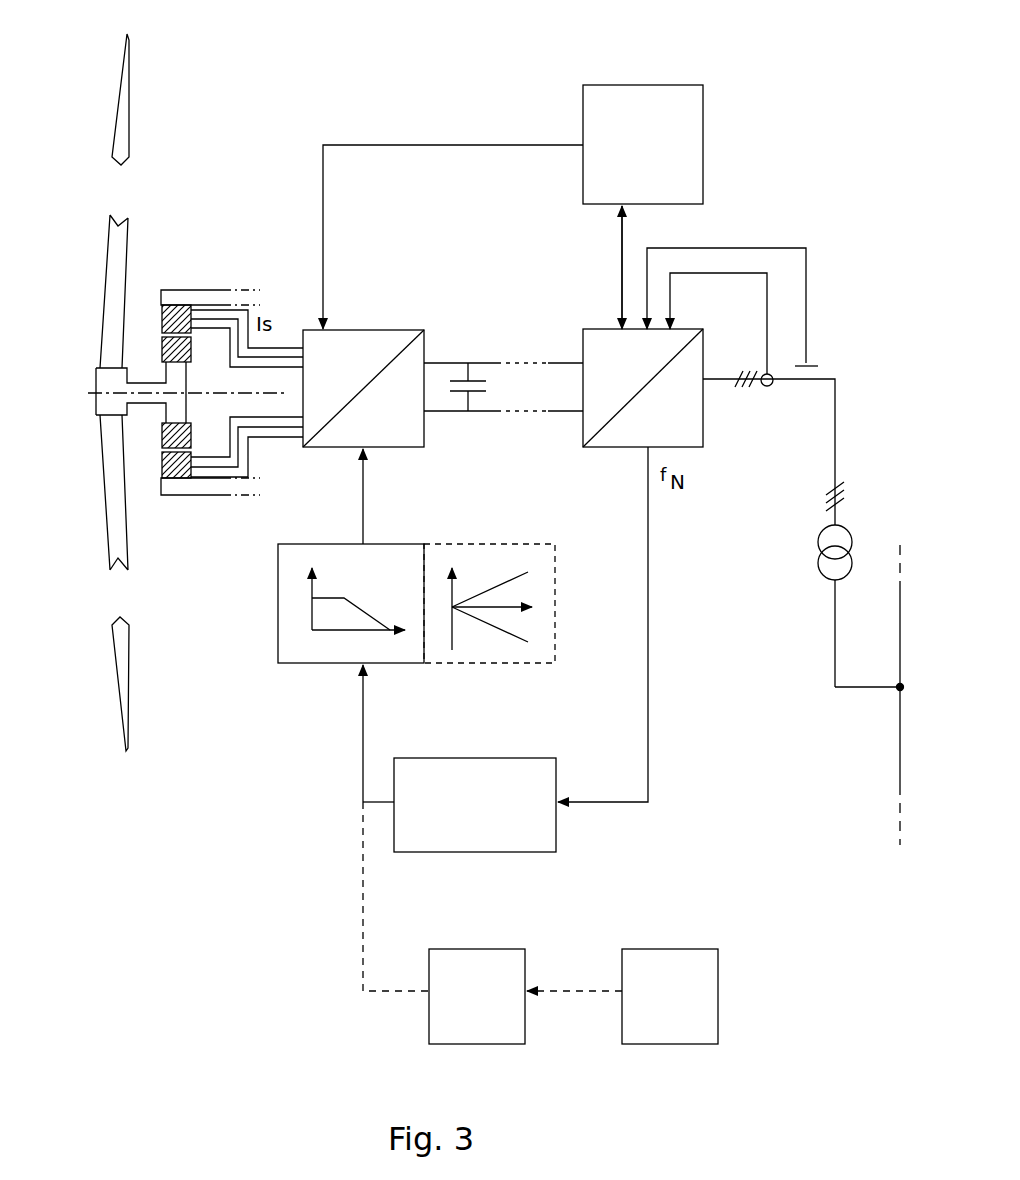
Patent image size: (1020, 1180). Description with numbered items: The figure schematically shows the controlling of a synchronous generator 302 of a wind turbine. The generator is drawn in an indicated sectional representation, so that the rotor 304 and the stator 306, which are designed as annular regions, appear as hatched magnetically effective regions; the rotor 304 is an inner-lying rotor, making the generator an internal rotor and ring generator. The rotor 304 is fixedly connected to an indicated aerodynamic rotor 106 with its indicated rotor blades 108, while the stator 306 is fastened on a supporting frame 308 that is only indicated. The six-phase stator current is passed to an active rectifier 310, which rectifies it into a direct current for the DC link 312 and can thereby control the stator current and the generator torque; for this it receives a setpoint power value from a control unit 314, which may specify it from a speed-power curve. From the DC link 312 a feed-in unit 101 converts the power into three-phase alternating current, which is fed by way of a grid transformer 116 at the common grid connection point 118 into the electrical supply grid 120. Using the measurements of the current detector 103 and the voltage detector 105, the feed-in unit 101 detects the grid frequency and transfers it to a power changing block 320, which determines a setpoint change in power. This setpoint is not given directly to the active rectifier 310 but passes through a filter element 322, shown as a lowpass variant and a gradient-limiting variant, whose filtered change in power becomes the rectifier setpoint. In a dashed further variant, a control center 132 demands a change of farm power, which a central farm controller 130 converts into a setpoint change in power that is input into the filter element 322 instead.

The feed-in unit 101 is at (596, 337).
The current detector 103 is at (752, 396).
The voltage detector 105 is at (823, 340).
The aerodynamic rotor 106 is at (99, 369).
The rotor blades 108 is at (115, 251).
The grid transformer 116 is at (838, 527).
The common grid connection point 118 is at (884, 702).
The electrical supply grid 120 is at (898, 686).
The central farm controller 130 is at (478, 948).
The control center 132 is at (653, 948).
The synchronous generator 302 is at (248, 192).
The rotor 304 is at (160, 357).
The stator 306 is at (157, 318).
The supporting frame 308 is at (195, 297).
The active rectifier 310 is at (385, 337).
The DC link 312 is at (469, 345).
The control unit 314 is at (703, 171).
The power changing block 320 is at (533, 756).
The filter element 322 is at (278, 629).